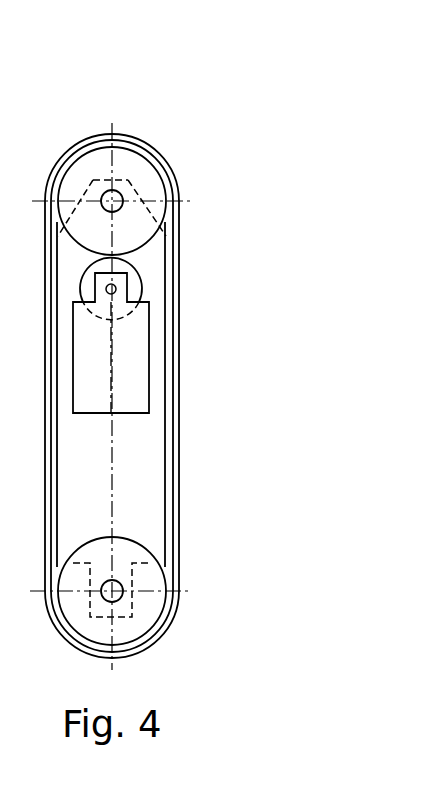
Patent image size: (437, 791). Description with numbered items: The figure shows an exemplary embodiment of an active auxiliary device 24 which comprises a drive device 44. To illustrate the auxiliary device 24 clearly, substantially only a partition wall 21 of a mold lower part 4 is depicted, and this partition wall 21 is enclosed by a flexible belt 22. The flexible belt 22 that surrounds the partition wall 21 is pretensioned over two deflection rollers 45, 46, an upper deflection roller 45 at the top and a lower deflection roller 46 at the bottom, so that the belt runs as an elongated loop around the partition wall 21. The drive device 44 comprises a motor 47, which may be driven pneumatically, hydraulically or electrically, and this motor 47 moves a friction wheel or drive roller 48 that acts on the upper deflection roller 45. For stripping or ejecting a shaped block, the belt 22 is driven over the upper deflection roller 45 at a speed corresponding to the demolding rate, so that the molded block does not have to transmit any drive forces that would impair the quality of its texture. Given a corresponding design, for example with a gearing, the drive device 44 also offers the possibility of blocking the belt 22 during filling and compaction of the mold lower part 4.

The mold lower part 4 is at (177, 102).
The partition wall 21 is at (210, 147).
The flexible belt 22 is at (176, 467).
The active auxiliary device 24 is at (133, 345).
The drive device 44 is at (111, 311).
The upper deflection roller 45 is at (95, 158).
The deflection roller 46 is at (150, 610).
The motor 47 is at (142, 390).
The drive roller 48 is at (137, 283).